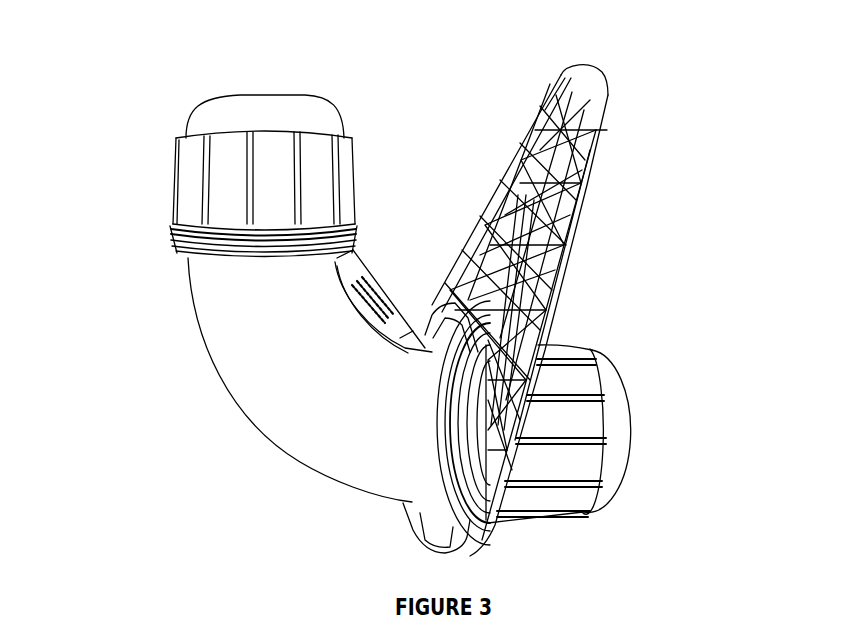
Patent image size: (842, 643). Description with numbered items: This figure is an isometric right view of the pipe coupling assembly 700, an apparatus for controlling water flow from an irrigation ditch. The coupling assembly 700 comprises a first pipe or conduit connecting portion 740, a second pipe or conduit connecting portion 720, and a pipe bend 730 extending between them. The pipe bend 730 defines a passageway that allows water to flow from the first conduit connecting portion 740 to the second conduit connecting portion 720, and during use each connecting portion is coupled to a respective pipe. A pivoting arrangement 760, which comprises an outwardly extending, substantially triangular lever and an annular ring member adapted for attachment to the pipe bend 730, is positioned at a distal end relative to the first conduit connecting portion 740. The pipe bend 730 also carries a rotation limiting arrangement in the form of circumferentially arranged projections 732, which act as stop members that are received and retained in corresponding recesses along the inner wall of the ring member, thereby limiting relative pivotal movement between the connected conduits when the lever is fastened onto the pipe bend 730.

The pipe coupling assembly 700 is at (381, 286).
The second pipe or conduit connecting portion 720 is at (590, 363).
The pipe bend 730 is at (252, 386).
The projections 732 is at (486, 424).
The first pipe or conduit connecting portion 740 is at (173, 168).
The pivoting arrangement 760 is at (572, 213).